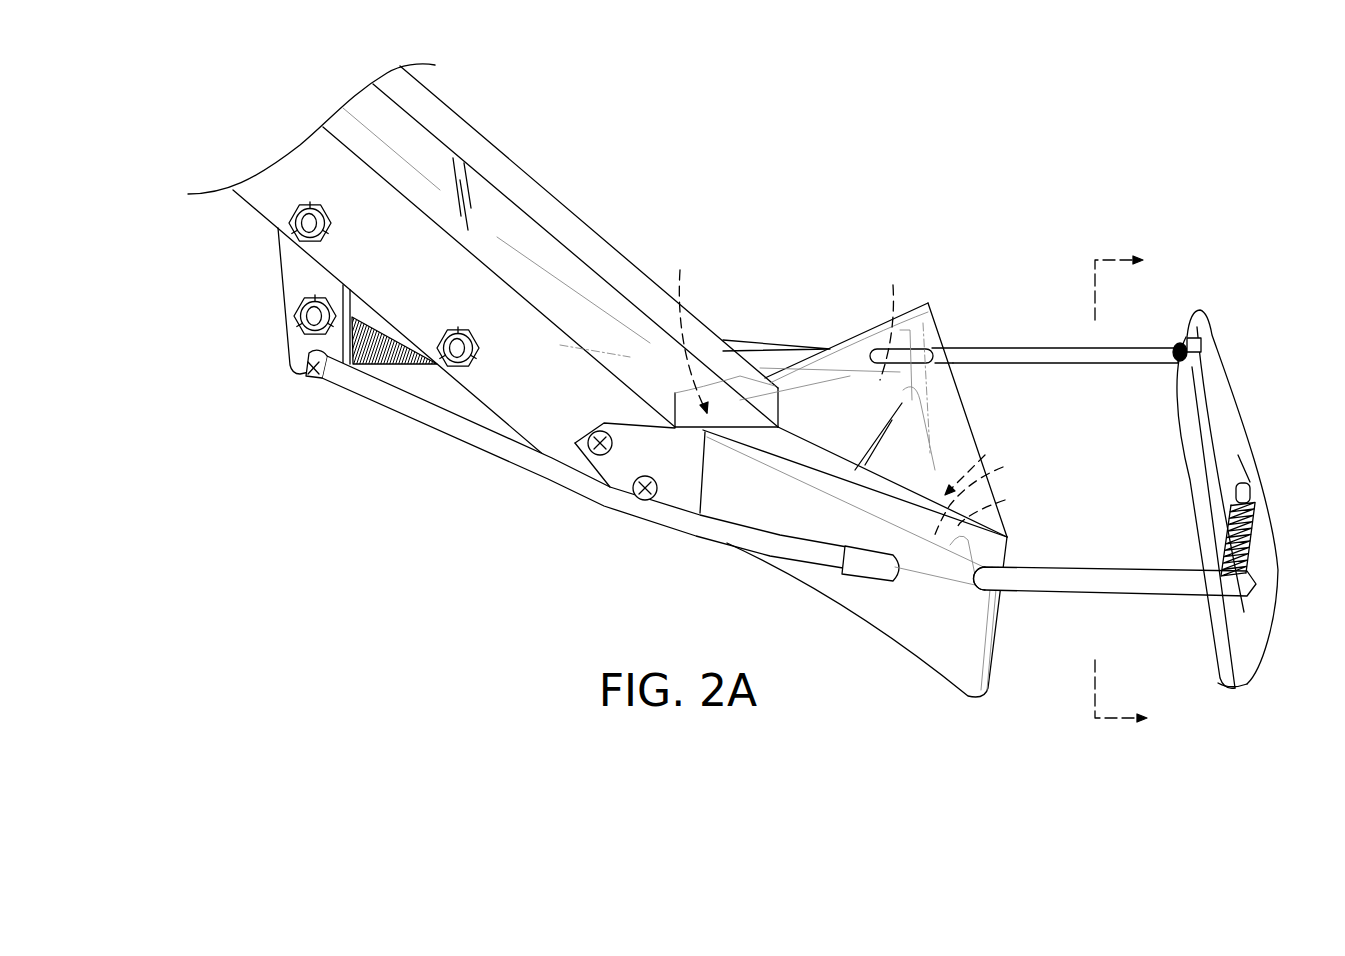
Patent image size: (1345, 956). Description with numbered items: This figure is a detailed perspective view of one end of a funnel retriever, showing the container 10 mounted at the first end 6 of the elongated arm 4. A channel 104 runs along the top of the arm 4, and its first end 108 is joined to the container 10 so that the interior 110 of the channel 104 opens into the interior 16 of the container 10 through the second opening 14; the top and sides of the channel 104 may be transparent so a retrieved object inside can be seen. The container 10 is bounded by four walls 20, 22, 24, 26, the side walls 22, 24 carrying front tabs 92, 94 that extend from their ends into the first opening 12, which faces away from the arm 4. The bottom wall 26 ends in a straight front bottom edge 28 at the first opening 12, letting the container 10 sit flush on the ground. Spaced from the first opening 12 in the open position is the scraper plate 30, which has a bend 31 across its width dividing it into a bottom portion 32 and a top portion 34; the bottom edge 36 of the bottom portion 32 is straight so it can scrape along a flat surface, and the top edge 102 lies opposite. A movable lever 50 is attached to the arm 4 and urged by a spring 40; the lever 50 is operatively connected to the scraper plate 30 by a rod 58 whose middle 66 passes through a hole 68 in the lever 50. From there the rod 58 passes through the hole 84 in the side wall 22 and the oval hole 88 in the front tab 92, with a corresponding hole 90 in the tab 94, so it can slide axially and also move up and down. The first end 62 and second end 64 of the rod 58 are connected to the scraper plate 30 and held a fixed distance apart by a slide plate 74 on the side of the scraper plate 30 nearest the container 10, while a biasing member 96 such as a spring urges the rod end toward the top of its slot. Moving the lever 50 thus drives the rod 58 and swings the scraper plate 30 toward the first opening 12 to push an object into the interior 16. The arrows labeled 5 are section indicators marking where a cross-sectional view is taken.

The elongated arm 4 is at (277, 177).
The channel 104 is at (487, 187).
The interior of the channel 110 is at (484, 195).
The movable lever 50 is at (297, 277).
The hole in the lever 68 is at (295, 360).
The middle of the rod 66 is at (318, 370).
The rod 58 is at (418, 410).
The spring 40 is at (387, 353).
The second opening 14 is at (687, 327).
The first end of the channel 108 is at (755, 367).
The first end of the arm 6 is at (746, 234).
The side wall 24 is at (891, 322).
The hole in front tab 90 is at (932, 357).
The front tab 94 is at (930, 377).
The first opening 12 is at (945, 436).
The front bottom edge 28 is at (985, 455).
The wall 20 is at (1003, 468).
The bottom wall 26 is at (1005, 501).
The front tab 92 is at (963, 540).
The hole in side wall 84 is at (900, 575).
The hole in front tab 88 is at (983, 577).
The side wall 22 is at (826, 590).
The container 10 is at (888, 632).
The first end of the rod 62 is at (1137, 613).
The section line 5 is at (1134, 490).
The second end of the rod 64 is at (1150, 333).
The top edge of the scraper plate 102 is at (1223, 370).
The slide plate 74 is at (1207, 427).
The scraper plate 30 is at (1238, 453).
The top portion 34 is at (1245, 472).
The biasing member 96 is at (1247, 547).
The bend 31 is at (1237, 642).
The bottom edge of the scraper plate 36 is at (1212, 637).
The bottom portion 32 is at (1230, 680).
The interior of the container 16 is at (855, 436).